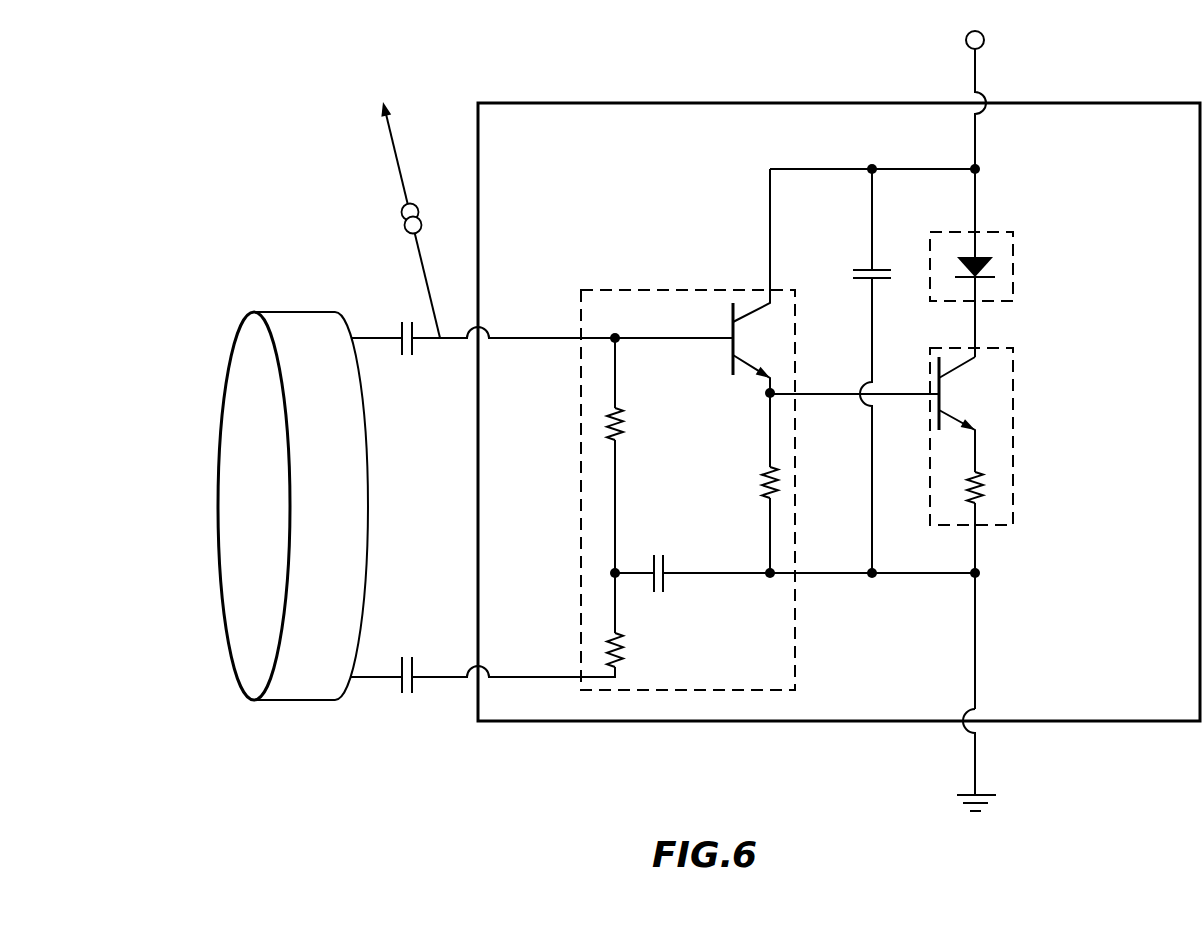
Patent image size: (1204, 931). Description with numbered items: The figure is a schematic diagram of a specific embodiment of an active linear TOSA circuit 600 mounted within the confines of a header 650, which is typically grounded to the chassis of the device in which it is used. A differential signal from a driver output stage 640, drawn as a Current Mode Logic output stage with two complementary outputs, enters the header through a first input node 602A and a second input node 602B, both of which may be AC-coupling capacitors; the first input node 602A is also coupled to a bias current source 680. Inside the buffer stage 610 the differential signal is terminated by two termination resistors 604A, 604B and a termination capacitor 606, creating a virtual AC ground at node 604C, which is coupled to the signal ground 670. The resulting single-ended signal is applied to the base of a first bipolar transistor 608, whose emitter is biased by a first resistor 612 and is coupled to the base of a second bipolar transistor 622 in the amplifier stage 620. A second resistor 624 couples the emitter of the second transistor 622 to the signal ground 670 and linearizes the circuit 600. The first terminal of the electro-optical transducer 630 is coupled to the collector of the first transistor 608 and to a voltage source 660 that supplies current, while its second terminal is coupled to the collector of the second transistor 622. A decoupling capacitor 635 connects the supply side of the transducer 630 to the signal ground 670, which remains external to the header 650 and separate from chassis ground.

The active linear TOSA circuit 600 is at (708, 163).
The first input node 602A is at (413, 346).
The second input node 602B is at (413, 692).
The termination resistor 604A is at (622, 420).
The termination resistor 604B is at (623, 646).
The virtual ground node 604C is at (612, 574).
The termination capacitor 606 is at (667, 568).
The first bipolar transistor 608 is at (742, 338).
The buffer stage 610 is at (658, 298).
The first resistor 612 is at (778, 484).
The amplifier stage 620 is at (1002, 457).
The second bipolar transistor 622 is at (953, 395).
The second resistor 624 is at (968, 494).
The electro-optical transducer 630 is at (1002, 240).
The decoupling capacitor 635 is at (857, 269).
The driver output stage 640 is at (295, 312).
The header 650 is at (840, 103).
The voltage source 660 is at (966, 40).
The signal ground 670 is at (975, 812).
The bias current source 680 is at (401, 211).